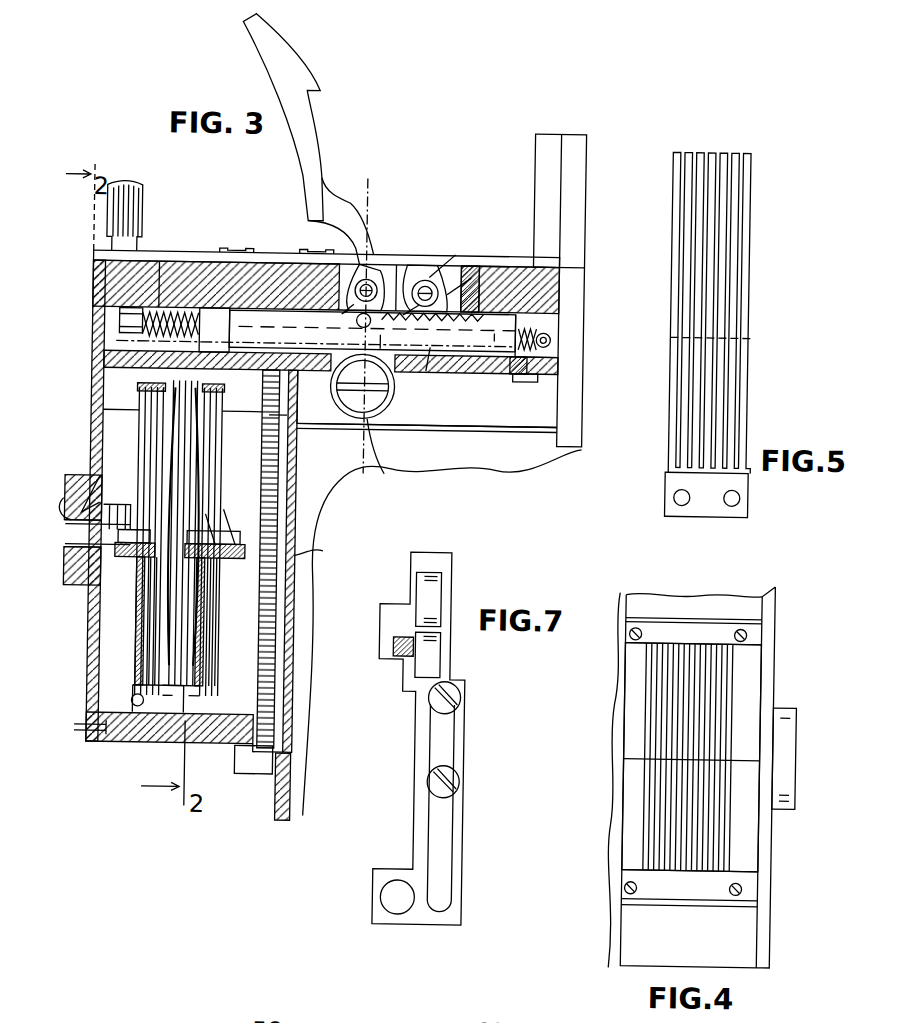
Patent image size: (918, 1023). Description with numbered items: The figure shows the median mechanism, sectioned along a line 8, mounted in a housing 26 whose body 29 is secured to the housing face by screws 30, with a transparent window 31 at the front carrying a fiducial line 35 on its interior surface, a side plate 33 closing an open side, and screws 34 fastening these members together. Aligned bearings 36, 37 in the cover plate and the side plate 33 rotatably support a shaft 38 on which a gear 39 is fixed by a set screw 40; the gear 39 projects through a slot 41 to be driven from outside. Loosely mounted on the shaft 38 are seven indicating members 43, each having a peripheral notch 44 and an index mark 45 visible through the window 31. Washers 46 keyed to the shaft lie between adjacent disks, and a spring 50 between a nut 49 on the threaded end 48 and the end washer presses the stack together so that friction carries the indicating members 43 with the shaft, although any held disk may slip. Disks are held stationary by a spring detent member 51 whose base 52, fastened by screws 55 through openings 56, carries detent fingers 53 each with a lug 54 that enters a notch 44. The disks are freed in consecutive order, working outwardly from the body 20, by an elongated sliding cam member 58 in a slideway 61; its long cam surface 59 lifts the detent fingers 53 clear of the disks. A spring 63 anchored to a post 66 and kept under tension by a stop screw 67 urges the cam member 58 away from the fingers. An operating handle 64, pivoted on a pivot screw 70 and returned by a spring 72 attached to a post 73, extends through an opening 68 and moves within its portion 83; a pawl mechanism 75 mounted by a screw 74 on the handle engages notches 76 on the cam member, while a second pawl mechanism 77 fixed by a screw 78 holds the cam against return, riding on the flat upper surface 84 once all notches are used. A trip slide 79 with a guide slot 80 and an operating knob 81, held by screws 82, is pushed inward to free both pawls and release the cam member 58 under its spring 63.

In FIG. 3, the axis line 8 is at (370, 343).
In FIG. 3, the body 20 is at (490, 442).
In FIG. 3, the housing 26 is at (274, 810).
In FIG. 3, the body 29 is at (494, 256).
In FIG. 4, the body 29 is at (716, 600).
In FIG. 3, the screws 30 is at (235, 758).
In FIG. 4, the window 31 is at (742, 684).
In FIG. 3, the side plate 33 is at (96, 632).
In FIG. 3, the screws 34 is at (72, 723).
In FIG. 4, the screws 34 is at (744, 622).
In FIG. 4, the fiducial line 35 is at (634, 746).
In FIG. 3, the bearing 36 is at (311, 509).
In FIG. 3, the bearing 37 is at (62, 504).
In FIG. 4, the bearing 37 is at (782, 740).
In FIG. 3, the shaft 38 is at (130, 568).
In FIG. 3, the gear 39 is at (280, 408).
In FIG. 3, the set screw 40 is at (225, 552).
In FIG. 3, the slot 41 is at (254, 698).
In FIG. 3, the indicating members 43 is at (134, 404).
In FIG. 3, the notch 44 is at (223, 512).
In FIG. 4, the index mark 45 is at (659, 762).
In FIG. 3, the washers 46 is at (152, 584).
In FIG. 3, the threaded end 48 is at (86, 484).
In FIG. 3, the nut 49 is at (90, 472).
In FIG. 3, the spring 50 is at (123, 504).
In FIG. 5, the spring detent member 51 is at (650, 382).
In FIG. 3, the base 52 is at (132, 692).
In FIG. 5, the base 52 is at (660, 468).
In FIG. 3, the detent fingers 53 is at (185, 442).
In FIG. 5, the detent fingers 53 is at (744, 139).
In FIG. 5, the lug 54 is at (744, 324).
In FIG. 3, the screws 55 is at (142, 693).
In FIG. 5, the openings 56 is at (668, 485).
In FIG. 3, the sliding cam member 58 is at (466, 344).
In FIG. 3, the cam surface 59 is at (436, 377).
In FIG. 3, the slideway 61 is at (535, 348).
In FIG. 3, the spring 63 is at (535, 322).
In FIG. 3, the operating handle 64 is at (280, 58).
In FIG. 7, the operating handle 64 is at (390, 647).
In FIG. 3, the post 66 is at (544, 330).
In FIG. 3, the stop screw 67 is at (515, 373).
In FIG. 3, the opening 68 is at (384, 296).
In FIG. 7, the opening 68 is at (440, 548).
In FIG. 3, the pivot screw 70 is at (376, 426).
In FIG. 3, the spring 72 is at (168, 304).
In FIG. 3, the post 73 is at (109, 320).
In FIG. 3, the screw 74 is at (370, 255).
In FIG. 3, the pawl mechanism 75 is at (388, 272).
In FIG. 7, the pawl mechanism 75 is at (428, 650).
In FIG. 3, the notches 76 is at (464, 296).
In FIG. 3, the second pawl mechanism 77 is at (474, 273).
In FIG. 7, the second pawl mechanism 77 is at (428, 590).
In FIG. 3, the screw 78 is at (453, 253).
In FIG. 3, the slide 79 is at (150, 262).
In FIG. 7, the slide 79 is at (460, 826).
In FIG. 7, the guide slot 80 is at (440, 864).
In FIG. 3, the operating knob 81 is at (130, 182).
In FIG. 7, the operating knob 81 is at (395, 875).
In FIG. 7, the screws 82 is at (452, 686).
In FIG. 7, the portion 83 is at (388, 608).
In FIG. 3, the flat upper surface 84 is at (466, 296).